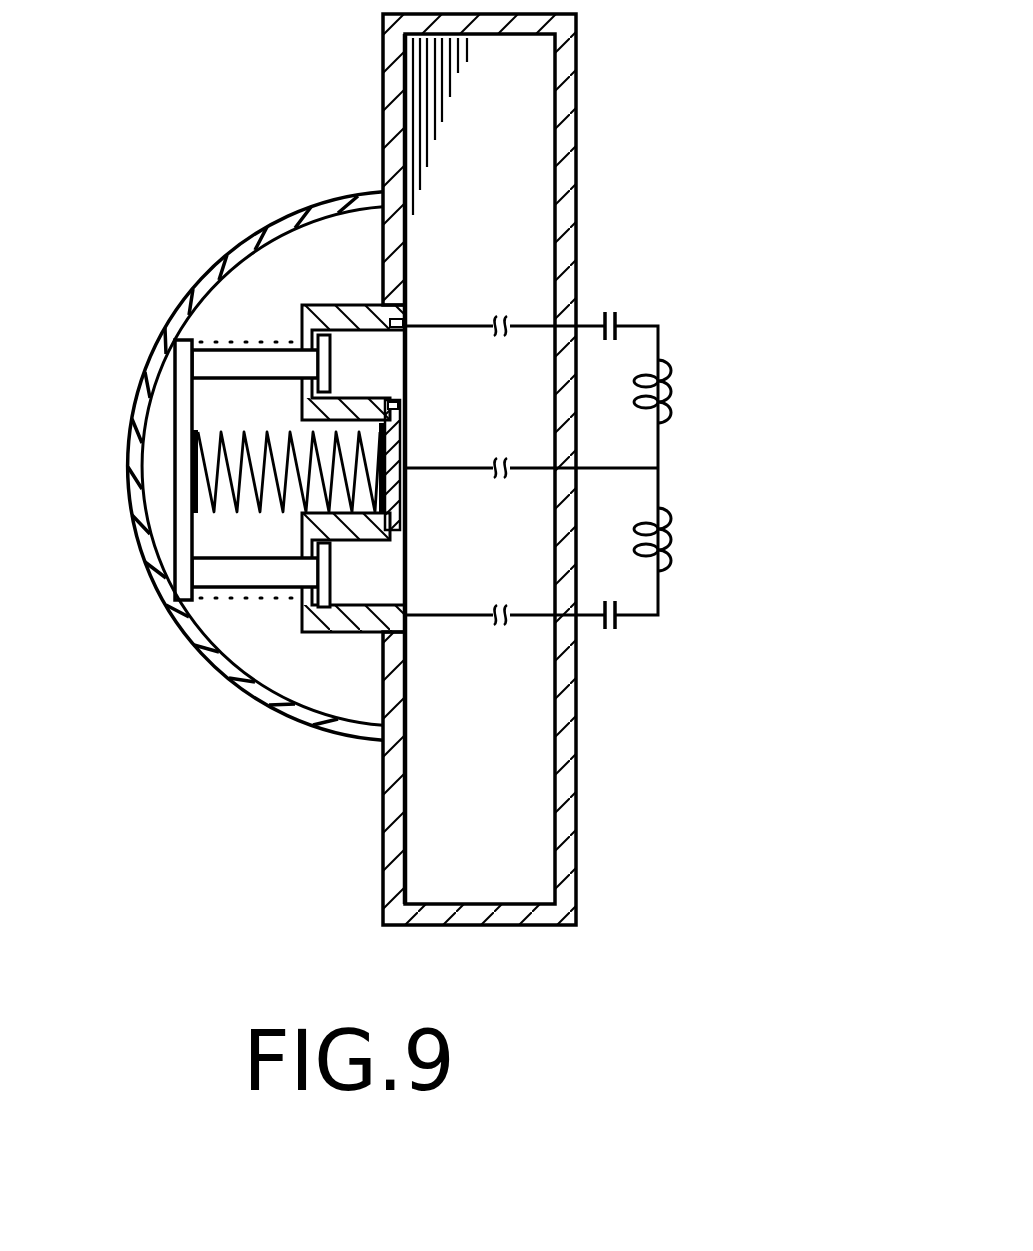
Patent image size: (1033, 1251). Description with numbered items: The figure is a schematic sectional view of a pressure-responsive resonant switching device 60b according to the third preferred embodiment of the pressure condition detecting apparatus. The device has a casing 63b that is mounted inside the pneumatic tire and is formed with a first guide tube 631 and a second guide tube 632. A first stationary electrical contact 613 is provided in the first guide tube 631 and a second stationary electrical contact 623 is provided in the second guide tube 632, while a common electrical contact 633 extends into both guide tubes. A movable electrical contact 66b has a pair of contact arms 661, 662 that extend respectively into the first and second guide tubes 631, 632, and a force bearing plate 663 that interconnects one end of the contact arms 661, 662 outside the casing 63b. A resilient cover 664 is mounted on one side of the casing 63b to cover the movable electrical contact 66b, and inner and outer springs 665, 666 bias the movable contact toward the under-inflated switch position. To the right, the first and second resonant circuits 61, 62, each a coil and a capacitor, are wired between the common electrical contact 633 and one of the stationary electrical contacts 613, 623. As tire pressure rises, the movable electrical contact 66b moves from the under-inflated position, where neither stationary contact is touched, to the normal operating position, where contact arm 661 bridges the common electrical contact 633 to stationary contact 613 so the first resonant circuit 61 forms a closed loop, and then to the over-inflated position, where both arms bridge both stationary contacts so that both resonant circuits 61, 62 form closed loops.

The pressure-responsive resonant switching device 60b is at (651, 470).
The first resonant circuit 61 is at (693, 517).
The second resonant circuit 62 is at (695, 368).
The casing 63b is at (578, 62).
The first stationary electrical contact 613 is at (357, 610).
The second stationary electrical contact 623 is at (407, 297).
The first guide tube 631 is at (328, 623).
The second guide tube 632 is at (345, 315).
The common electrical contact 633 is at (410, 437).
The movable electrical contact 66b is at (155, 436).
The contact arm 661 is at (220, 598).
The contact arm 662 is at (234, 352).
The force bearing plate 663 is at (178, 396).
The resilient cover 664 is at (136, 528).
The inner spring 665 is at (232, 508).
The outer spring 666 is at (250, 600).